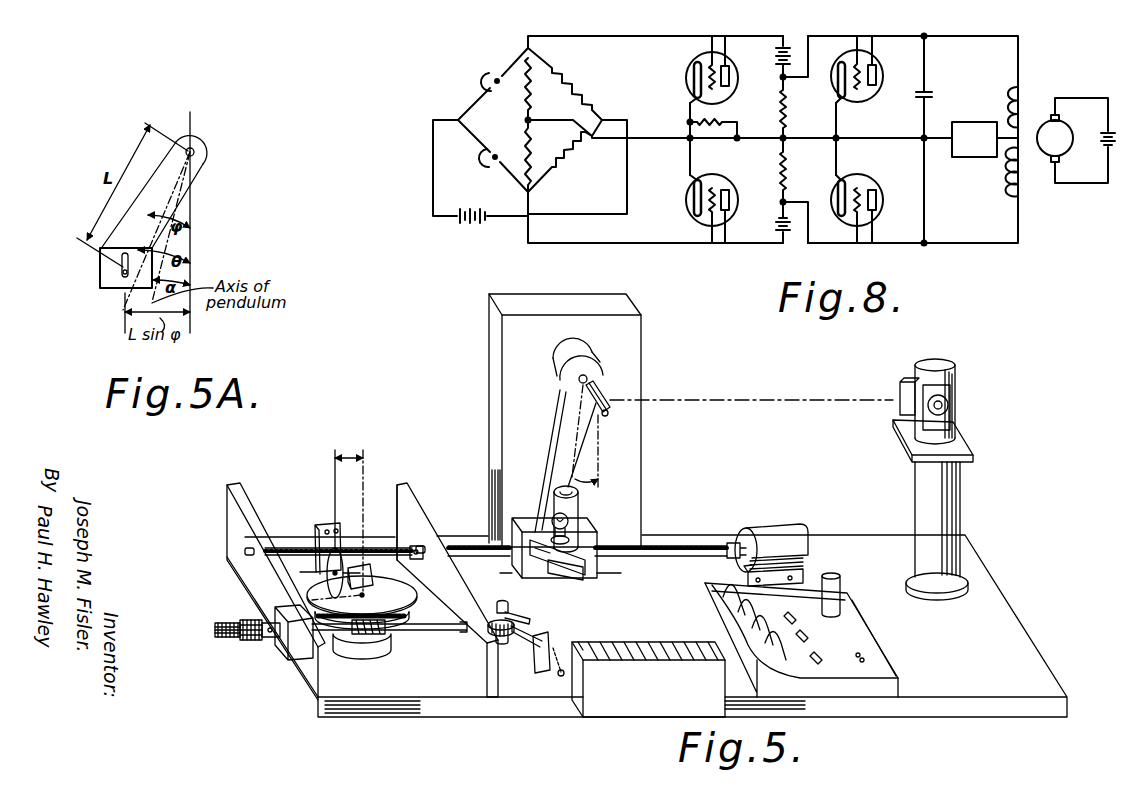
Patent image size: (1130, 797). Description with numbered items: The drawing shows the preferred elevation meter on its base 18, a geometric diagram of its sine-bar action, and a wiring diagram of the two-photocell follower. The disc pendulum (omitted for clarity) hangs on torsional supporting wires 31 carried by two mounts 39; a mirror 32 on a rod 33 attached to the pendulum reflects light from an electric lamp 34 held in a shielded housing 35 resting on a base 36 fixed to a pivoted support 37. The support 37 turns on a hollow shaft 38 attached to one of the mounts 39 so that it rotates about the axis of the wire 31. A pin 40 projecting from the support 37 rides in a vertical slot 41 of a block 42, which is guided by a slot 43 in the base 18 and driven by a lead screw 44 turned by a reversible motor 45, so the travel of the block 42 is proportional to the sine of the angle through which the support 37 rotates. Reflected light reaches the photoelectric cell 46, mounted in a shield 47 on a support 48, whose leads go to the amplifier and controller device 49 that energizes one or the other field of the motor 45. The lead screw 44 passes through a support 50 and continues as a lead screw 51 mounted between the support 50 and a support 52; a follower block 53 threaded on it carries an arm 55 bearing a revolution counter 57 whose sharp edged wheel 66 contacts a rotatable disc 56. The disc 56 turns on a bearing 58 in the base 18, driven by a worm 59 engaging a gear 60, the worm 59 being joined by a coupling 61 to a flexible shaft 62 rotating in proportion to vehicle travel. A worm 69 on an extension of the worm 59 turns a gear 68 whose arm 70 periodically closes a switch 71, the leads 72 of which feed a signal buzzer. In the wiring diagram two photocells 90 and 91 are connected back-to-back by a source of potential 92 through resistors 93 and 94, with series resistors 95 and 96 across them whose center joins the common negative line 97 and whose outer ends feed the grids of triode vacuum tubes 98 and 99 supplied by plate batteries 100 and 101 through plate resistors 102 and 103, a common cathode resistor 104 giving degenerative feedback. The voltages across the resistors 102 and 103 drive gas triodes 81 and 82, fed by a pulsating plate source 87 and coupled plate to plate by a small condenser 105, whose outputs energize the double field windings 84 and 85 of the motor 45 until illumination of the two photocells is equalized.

In FIG. 5, the base 18 is at (472, 709).
In FIG. 5, the torsional supporting wires 31 is at (589, 378).
In FIG. 5, the mirror 32 is at (609, 391).
In FIG. 5, the rod 33 is at (609, 412).
In FIG. 5, the electric lamp 34 is at (572, 522).
In FIG. 5, the shielded housing 35 is at (580, 498).
In FIG. 5, the base 36 is at (586, 576).
In FIG. 5A, the pivoted support 37 is at (180, 196).
In FIG. 5, the pivoted support 37 is at (550, 447).
In FIG. 5, the hollow shaft 38 is at (592, 348).
In FIG. 5A, the mounts 39 is at (191, 233).
In FIG. 5, the mounts 39 is at (489, 327).
In FIG. 5A, the pin 40 is at (120, 260).
In FIG. 5A, the slot 41 is at (121, 268).
In FIG. 5A, the block 42 is at (118, 276).
In FIG. 5, the block 42 is at (519, 520).
In FIG. 5, the slot 43 is at (618, 575).
In FIG. 5, the lead screw 44 is at (681, 546).
In FIG. 8, the reversible motor 45 is at (1039, 106).
In FIG. 5, the reversible motor 45 is at (765, 528).
In FIG. 5, the photoelectric cell 46 is at (955, 404).
In FIG. 5, the shield 47 is at (957, 382).
In FIG. 5, the support 48 is at (960, 505).
In FIG. 5, the amplifier and controller device 49 is at (876, 690).
In FIG. 5, the support 50 is at (406, 492).
In FIG. 5, the lead screw 51 is at (300, 548).
In FIG. 5, the support 52 is at (228, 507).
In FIG. 5, the follower block 53 is at (318, 527).
In FIG. 5, the arm 55 is at (337, 548).
In FIG. 5, the rotatable disc 56 is at (405, 603).
In FIG. 5, the revolution counter 57 is at (374, 578).
In FIG. 5, the bearing 58 is at (370, 652).
In FIG. 5, the worm 59 is at (441, 633).
In FIG. 5, the gear 60 is at (402, 626).
In FIG. 5, the coupling 61 is at (272, 648).
In FIG. 5, the flexible shaft 62 is at (231, 639).
In FIG. 5, the sharp edged wheel 66 is at (352, 556).
In FIG. 5, the gear 68 is at (498, 606).
In FIG. 5, the worm 69 is at (513, 646).
In FIG. 5, the arm 70 is at (523, 617).
In FIG. 5, the switch 71 is at (533, 637).
In FIG. 5, the leads 72 is at (557, 652).
In FIG. 8, the gas triode 81 is at (880, 70).
In FIG. 8, the gas triode 82 is at (872, 182).
In FIG. 8, the field winding 84 is at (1032, 182).
In FIG. 8, the field winding 85 is at (1023, 102).
In FIG. 8, the source of plate E. M. F. 87 is at (975, 158).
In FIG. 8, the photocell 90 is at (492, 78).
In FIG. 8, the photocell 91 is at (494, 165).
In FIG. 8, the source of potential 92 is at (474, 226).
In FIG. 8, the resistor 93 is at (572, 84).
In FIG. 8, the resistor 94 is at (571, 160).
In FIG. 8, the resistor 95 is at (532, 94).
In FIG. 8, the resistor 96 is at (533, 160).
In FIG. 8, the common negative line 97 is at (672, 141).
In FIG. 8, the triode vacuum tube 98 is at (686, 72).
In FIG. 8, the triode vacuum tube 99 is at (689, 216).
In FIG. 8, the plate battery 100 is at (787, 46).
In FIG. 8, the plate battery 101 is at (797, 234).
In FIG. 8, the plate resistor 102 is at (787, 113).
In FIG. 8, the plate resistor 103 is at (794, 162).
In FIG. 8, the resistor 104 is at (723, 118).
In FIG. 8, the condenser 105 is at (930, 93).